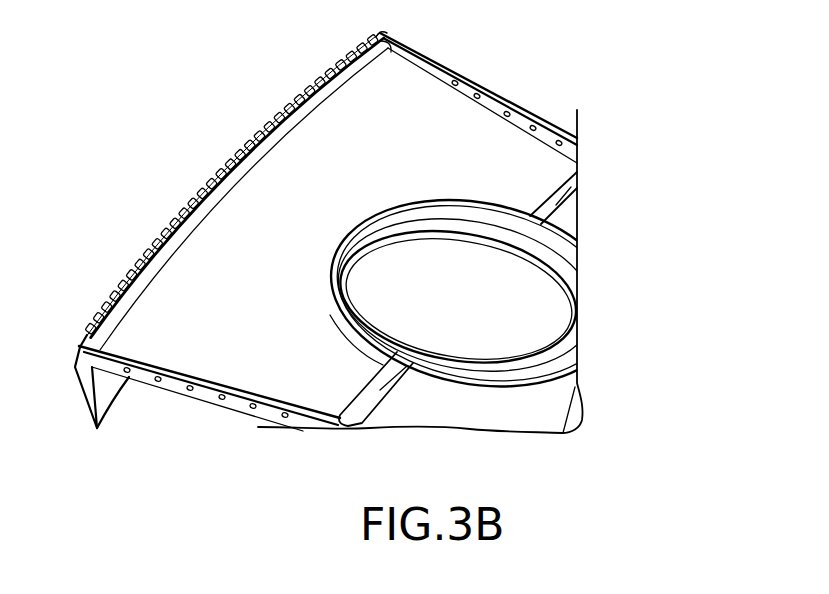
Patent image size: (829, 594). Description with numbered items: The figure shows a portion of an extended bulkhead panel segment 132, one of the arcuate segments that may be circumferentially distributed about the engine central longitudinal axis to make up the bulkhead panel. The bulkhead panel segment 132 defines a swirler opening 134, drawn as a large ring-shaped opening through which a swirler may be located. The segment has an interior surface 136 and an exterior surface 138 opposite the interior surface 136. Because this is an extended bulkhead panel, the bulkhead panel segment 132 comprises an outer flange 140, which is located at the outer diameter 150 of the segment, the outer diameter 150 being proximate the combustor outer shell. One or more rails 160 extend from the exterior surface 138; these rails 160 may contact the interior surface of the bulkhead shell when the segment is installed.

The bulkhead panel segment 132 is at (152, 104).
The swirler opening 134 is at (549, 300).
The interior surface 136 is at (170, 391).
The exterior surface 138 is at (313, 197).
The outer flange 140 is at (86, 392).
The outer diameter 150 is at (281, 104).
The rail 160 is at (494, 108).